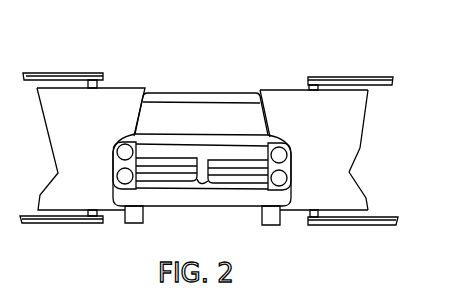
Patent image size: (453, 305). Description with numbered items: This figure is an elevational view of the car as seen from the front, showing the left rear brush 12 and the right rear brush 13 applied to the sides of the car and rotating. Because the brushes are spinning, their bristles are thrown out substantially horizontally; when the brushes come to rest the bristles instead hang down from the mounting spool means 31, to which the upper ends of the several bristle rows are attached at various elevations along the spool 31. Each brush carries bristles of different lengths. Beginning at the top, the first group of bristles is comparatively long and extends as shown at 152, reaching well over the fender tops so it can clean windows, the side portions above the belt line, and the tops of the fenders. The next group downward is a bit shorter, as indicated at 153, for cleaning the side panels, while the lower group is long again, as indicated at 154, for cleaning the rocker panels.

The left rear brush 12 is at (285, 90).
The right rear brush 13 is at (128, 88).
The mounting spool means 31 is at (96, 82).
The first group of bristles 152 is at (366, 109).
The next group of bristles 153 is at (351, 172).
The lower group of bristles 154 is at (368, 208).